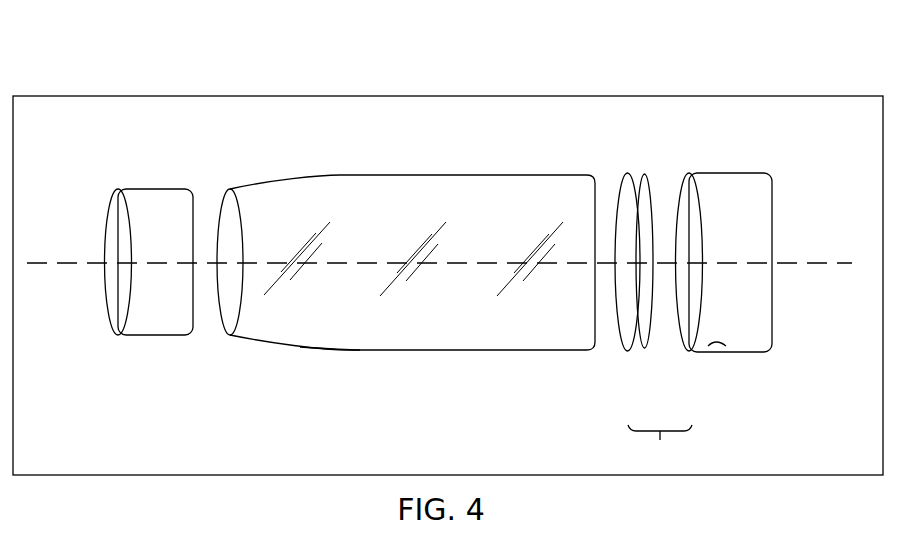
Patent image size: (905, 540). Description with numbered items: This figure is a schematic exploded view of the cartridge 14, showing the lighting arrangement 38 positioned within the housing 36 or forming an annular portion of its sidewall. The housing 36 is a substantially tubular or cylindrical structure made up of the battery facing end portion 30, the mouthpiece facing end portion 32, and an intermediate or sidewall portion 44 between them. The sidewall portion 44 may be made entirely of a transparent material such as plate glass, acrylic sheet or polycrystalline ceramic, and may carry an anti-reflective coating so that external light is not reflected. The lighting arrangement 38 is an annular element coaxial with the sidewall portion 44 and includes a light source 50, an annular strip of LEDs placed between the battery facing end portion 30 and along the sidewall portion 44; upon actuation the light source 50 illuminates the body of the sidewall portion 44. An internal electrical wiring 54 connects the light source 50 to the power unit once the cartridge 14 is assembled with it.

The cartridge 14 is at (143, 95).
The mouthpiece facing end portion 32 is at (155, 189).
The intermediate or sidewall portion 44 is at (443, 175).
The housing 36 is at (371, 350).
The light source 50 is at (640, 350).
The lighting arrangement 38 is at (660, 445).
The battery facing end portion 30 is at (718, 173).
The internal electrical wiring 54 is at (712, 344).